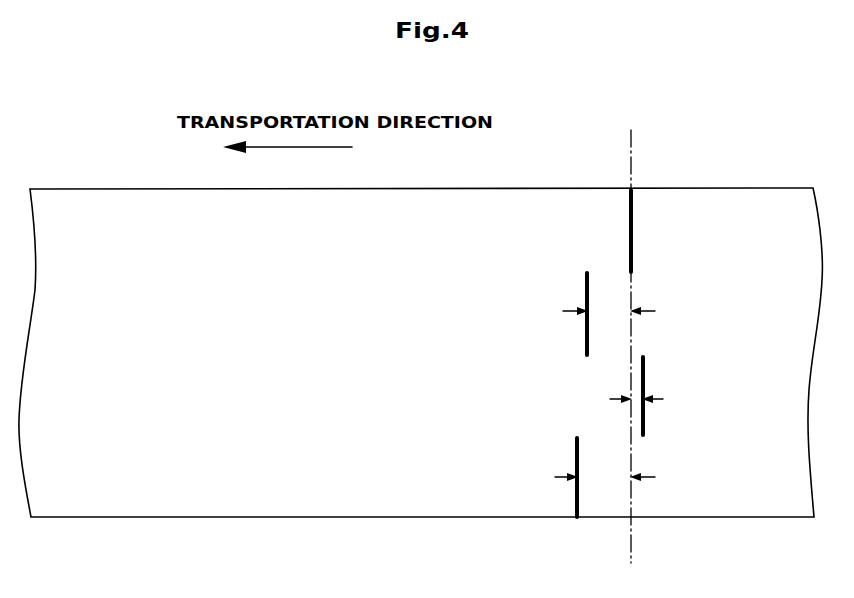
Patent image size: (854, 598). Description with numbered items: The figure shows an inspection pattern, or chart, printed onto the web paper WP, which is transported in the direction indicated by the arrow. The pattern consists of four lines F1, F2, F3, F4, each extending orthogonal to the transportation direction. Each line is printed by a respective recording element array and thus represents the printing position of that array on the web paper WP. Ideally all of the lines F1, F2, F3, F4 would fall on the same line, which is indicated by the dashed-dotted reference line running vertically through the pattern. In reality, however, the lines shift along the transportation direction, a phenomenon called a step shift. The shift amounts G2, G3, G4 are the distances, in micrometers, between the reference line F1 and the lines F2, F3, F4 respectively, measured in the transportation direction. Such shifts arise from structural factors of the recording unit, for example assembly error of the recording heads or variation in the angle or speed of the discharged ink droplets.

The web paper WP is at (122, 195).
The line F1 is at (629, 216).
The line F2 is at (585, 290).
The line F3 is at (645, 370).
The line F4 is at (575, 450).
The shift amount G2 is at (609, 304).
The shift amount G3 is at (637, 399).
The shift amount G4 is at (605, 469).